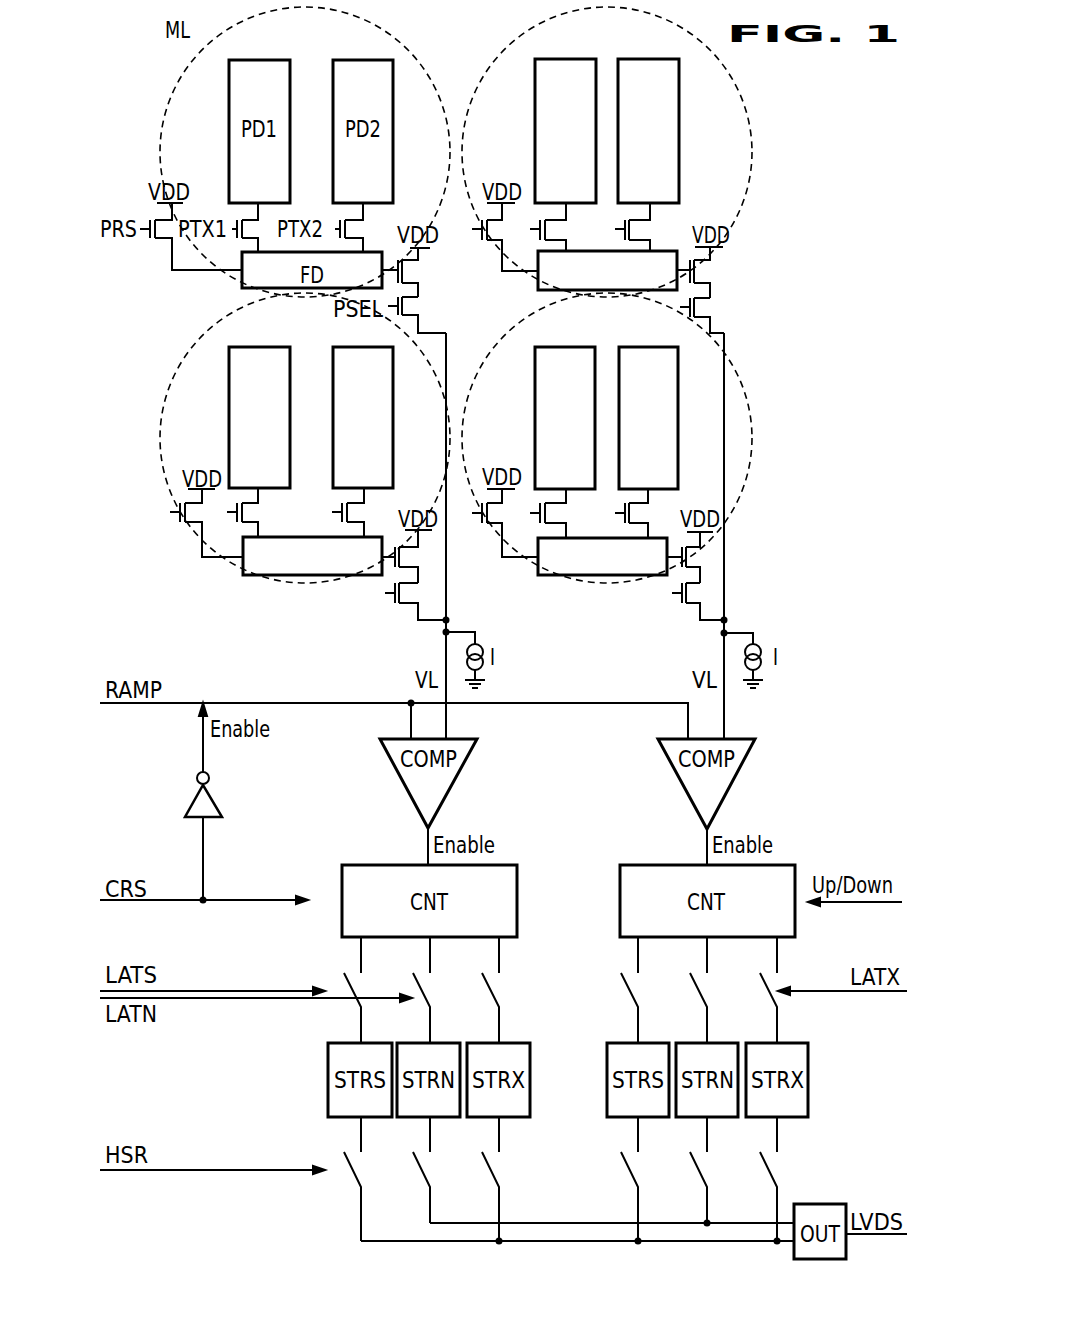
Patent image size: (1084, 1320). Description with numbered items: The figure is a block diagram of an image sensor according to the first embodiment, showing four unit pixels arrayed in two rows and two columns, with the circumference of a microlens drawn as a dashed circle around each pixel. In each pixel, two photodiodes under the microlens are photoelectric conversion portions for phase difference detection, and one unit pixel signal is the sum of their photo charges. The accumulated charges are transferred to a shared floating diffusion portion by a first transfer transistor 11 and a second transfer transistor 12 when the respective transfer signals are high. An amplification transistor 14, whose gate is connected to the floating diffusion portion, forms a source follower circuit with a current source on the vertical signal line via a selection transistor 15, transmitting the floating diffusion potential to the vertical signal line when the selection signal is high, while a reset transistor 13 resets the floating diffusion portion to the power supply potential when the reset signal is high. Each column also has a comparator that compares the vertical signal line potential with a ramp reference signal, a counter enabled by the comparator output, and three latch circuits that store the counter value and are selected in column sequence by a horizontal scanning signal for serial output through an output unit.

The transfer transistor 11 is at (247, 243).
The transfer transistor 12 is at (339, 220).
The reset transistor 13 is at (163, 242).
The amplification transistor 14 is at (415, 270).
The selection transistor 15 is at (415, 308).